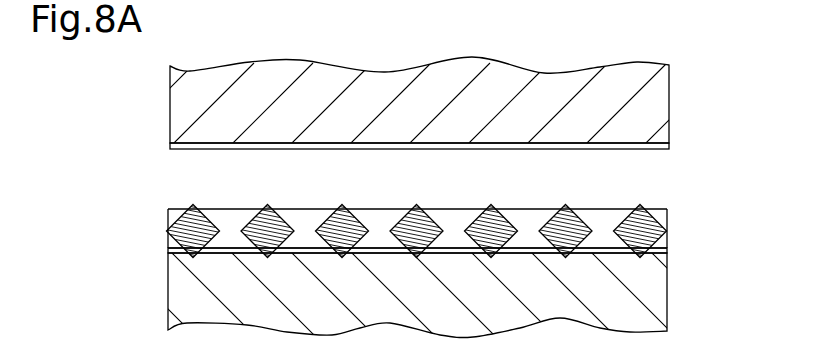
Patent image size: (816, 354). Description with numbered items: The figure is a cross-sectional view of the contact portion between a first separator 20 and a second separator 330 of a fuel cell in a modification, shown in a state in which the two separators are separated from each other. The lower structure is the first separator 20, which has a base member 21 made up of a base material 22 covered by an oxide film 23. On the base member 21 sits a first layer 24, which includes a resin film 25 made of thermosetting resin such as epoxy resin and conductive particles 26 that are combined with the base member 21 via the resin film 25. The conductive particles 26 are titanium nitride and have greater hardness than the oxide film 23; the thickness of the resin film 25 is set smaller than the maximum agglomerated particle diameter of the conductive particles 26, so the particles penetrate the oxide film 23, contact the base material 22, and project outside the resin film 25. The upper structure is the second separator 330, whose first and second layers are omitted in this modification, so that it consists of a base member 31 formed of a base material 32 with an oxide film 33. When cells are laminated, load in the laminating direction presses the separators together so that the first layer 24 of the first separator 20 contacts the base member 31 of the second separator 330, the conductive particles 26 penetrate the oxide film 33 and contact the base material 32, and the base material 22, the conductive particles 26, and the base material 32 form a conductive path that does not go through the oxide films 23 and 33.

The second separator 330 is at (412, 115).
The base member 31 is at (437, 115).
The base material 32 is at (670, 87).
The oxide film 33 is at (440, 158).
The first separator 20 is at (415, 272).
The base member 21 is at (435, 272).
The base material 22 is at (427, 298).
The oxide film 23 is at (668, 235).
The first layer 24 is at (369, 235).
The resin film 25 is at (172, 212).
The conductive particles 26 is at (170, 249).